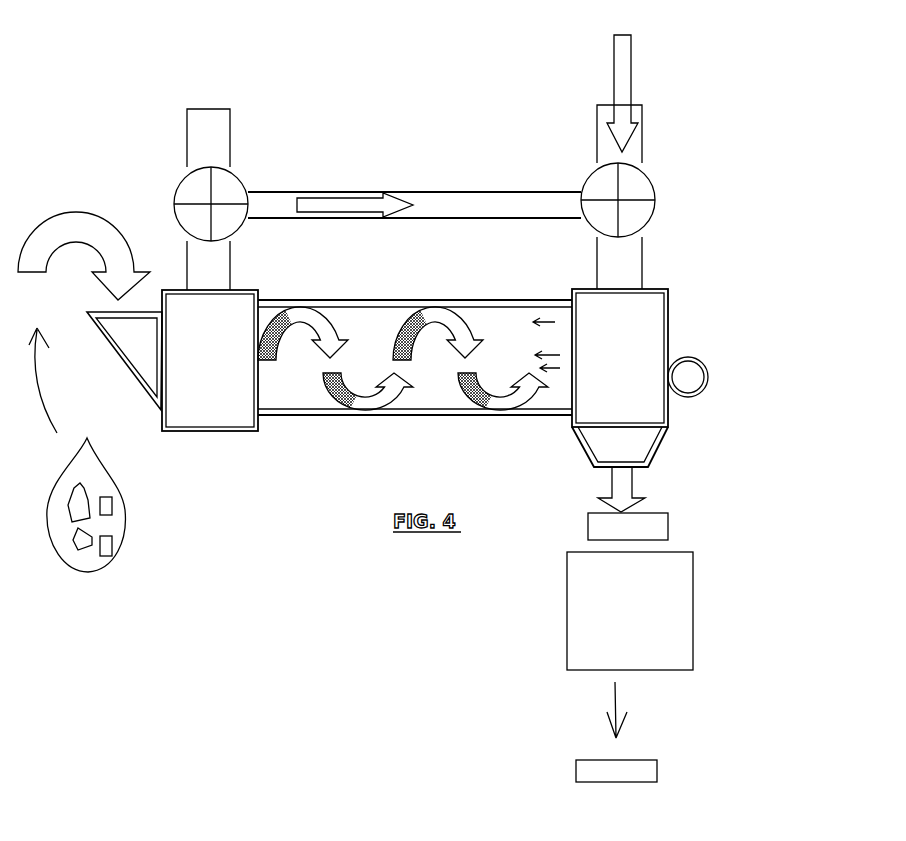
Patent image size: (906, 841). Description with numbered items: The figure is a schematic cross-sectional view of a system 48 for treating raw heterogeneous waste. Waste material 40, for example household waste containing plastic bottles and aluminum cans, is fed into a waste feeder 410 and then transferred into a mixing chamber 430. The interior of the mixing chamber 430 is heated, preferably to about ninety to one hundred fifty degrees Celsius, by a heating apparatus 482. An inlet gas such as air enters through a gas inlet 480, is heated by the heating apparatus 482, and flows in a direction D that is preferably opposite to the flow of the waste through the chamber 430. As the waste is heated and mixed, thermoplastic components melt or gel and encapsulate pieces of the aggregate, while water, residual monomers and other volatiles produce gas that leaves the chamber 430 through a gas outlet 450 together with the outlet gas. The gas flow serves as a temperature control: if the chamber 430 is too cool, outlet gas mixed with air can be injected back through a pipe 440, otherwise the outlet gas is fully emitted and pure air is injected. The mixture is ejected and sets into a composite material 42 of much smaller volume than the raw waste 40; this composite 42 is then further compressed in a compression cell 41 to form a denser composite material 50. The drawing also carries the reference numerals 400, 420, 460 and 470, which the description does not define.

The material processing system 400 is at (688, 92).
The waste feeder 410 is at (100, 311).
The feed material flow arrow 420 is at (86, 212).
The mixing chamber 430 is at (315, 405).
The pipe 440 is at (338, 200).
The gas outlet 450 is at (222, 137).
The gas conduit 460 is at (527, 200).
The blower valve 470 is at (642, 190).
The gas inlet 480 is at (643, 126).
The heating apparatus 482 is at (695, 360).
The direction D is at (540, 322).
The waste material 40 is at (128, 506).
The compression cell 41 is at (567, 580).
The composite material 42 is at (588, 520).
The system 48 is at (298, 531).
The composite material 50 is at (576, 772).